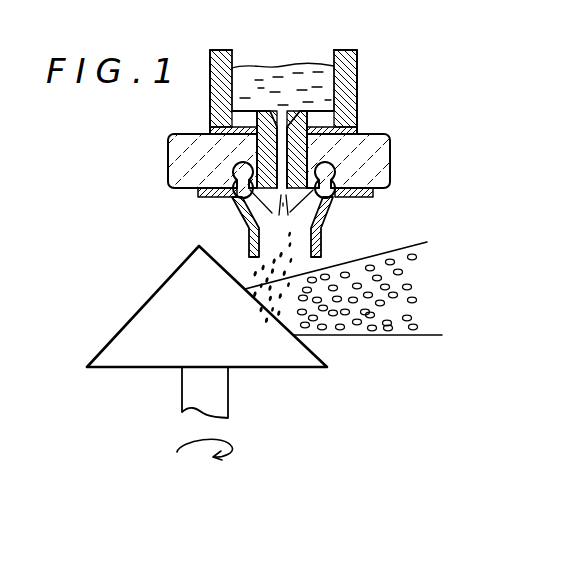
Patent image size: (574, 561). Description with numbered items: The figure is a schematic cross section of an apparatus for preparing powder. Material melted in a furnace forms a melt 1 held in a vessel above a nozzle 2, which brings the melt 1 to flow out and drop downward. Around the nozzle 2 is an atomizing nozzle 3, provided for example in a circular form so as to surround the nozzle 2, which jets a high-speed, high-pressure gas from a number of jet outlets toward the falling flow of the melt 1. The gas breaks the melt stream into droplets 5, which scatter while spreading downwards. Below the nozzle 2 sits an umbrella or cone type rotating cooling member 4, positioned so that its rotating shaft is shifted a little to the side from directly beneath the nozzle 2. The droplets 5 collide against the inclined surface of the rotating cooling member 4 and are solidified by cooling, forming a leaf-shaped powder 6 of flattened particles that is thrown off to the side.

The melt 1 is at (302, 70).
The nozzle 2 is at (268, 183).
The atomizing nozzle 3 is at (333, 177).
The rotating cooling member 4 is at (165, 293).
The droplets 5 is at (300, 256).
The leaf-shaped powder 6 is at (418, 300).